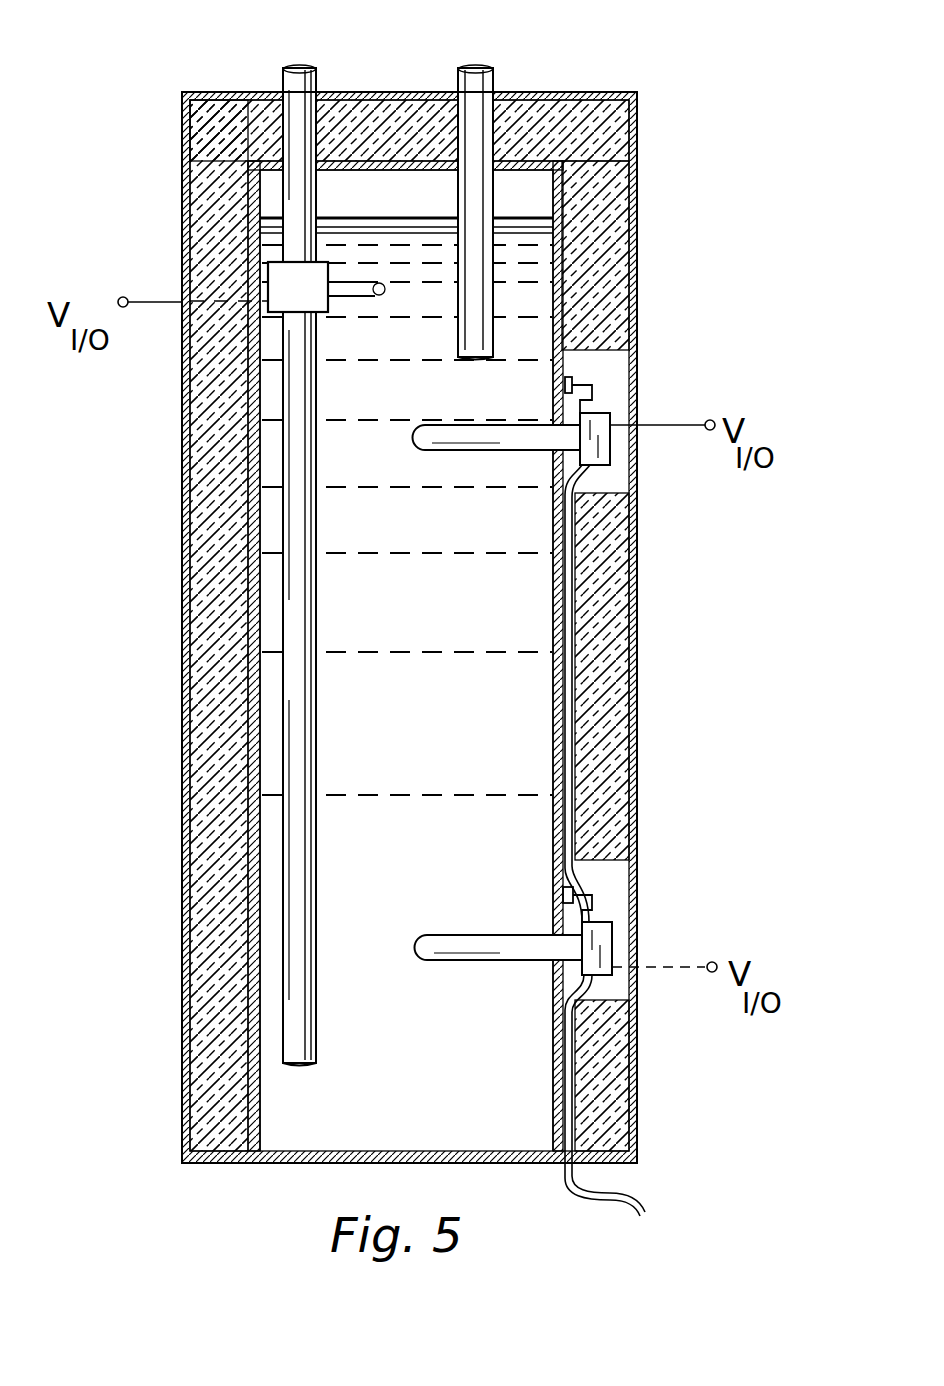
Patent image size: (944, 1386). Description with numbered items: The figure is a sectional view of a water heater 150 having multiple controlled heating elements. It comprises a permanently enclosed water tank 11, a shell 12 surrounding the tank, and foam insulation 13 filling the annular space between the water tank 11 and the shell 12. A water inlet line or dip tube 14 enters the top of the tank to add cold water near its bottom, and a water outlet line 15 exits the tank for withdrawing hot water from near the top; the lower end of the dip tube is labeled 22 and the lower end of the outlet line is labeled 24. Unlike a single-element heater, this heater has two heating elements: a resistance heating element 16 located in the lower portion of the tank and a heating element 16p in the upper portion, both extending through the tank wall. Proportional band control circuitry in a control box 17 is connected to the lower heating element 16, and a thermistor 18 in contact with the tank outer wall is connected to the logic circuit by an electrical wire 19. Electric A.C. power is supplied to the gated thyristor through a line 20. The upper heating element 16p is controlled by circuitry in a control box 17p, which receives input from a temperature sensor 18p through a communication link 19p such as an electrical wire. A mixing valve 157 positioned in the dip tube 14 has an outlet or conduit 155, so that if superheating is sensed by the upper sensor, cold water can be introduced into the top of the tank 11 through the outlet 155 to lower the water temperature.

The water tank 11 is at (270, 452).
The shell 12 is at (637, 130).
The foam insulation 13 is at (215, 163).
The dip tube 14 is at (300, 66).
The water outlet line 15 is at (480, 66).
The resistance heating element 16 is at (462, 948).
The heating element 16p is at (495, 447).
The control box 17 is at (612, 935).
The control box 17p is at (612, 458).
The thermistor 18 is at (563, 893).
The temperature sensor 18p is at (572, 385).
The electrical wire 19 is at (595, 905).
The communication link 19p is at (592, 395).
The line 20 is at (572, 656).
The lower end of first tube 22 is at (310, 1047).
The lower end of second tube 24 is at (468, 348).
The water heater 150 is at (676, 221).
The outlet 155 is at (358, 290).
The mixing valve 157 is at (325, 265).